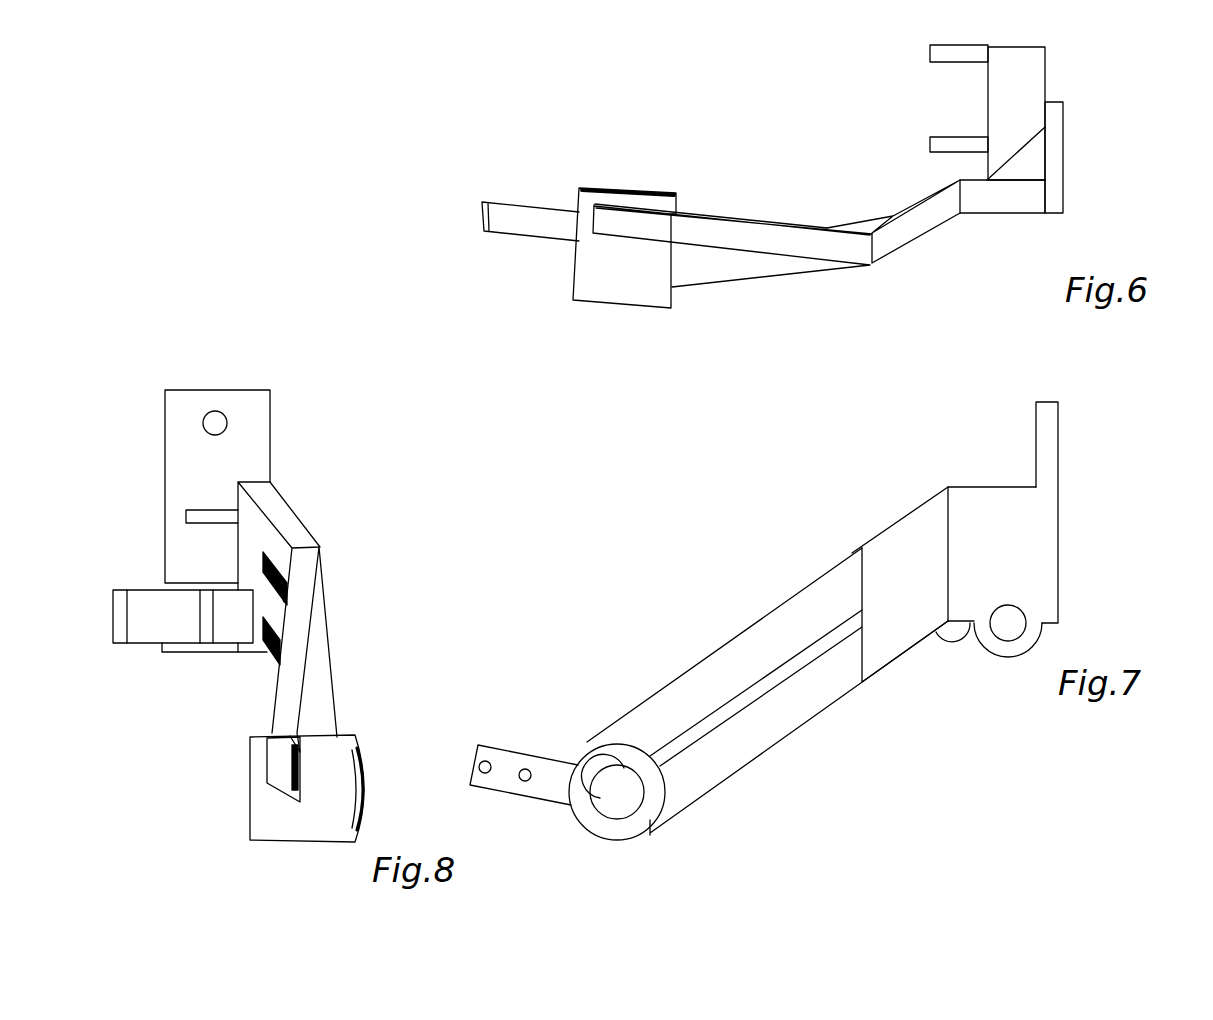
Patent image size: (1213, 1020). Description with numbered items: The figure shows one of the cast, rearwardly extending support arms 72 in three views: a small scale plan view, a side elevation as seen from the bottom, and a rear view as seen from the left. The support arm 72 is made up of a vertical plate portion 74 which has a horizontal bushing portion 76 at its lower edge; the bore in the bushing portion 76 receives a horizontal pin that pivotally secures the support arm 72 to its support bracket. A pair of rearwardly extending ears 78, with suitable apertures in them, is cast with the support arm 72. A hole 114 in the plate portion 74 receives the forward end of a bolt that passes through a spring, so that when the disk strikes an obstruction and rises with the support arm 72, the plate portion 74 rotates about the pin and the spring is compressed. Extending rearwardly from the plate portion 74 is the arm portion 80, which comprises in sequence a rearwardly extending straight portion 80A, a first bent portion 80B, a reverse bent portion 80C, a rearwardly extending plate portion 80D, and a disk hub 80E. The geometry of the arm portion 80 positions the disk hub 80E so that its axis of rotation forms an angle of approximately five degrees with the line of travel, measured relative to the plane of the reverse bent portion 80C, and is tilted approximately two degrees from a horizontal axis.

In FIG. 6, the support arm 72 is at (1115, 98).
In FIG. 7, the support arm 72 is at (1128, 502).
In FIG. 8, the support arm 72 is at (356, 484).
In FIG. 6, the vertical plate portion 74 is at (1064, 162).
In FIG. 7, the vertical plate portion 74 is at (1061, 420).
In FIG. 6, the horizontal bushing portion 76 is at (1037, 54).
In FIG. 8, the horizontal bushing portion 76 is at (144, 602).
In FIG. 6, the rearwardly extending ears 78 is at (929, 52).
In FIG. 8, the rearwardly extending ears 78 is at (119, 621).
In FIG. 6, the arm portion 80 is at (702, 204).
In FIG. 7, the arm portion 80 is at (855, 553).
In FIG. 8, the arm portion 80 is at (322, 548).
In FIG. 6, the rearwardly extending straight portion 80A is at (980, 200).
In FIG. 7, the rearwardly extending straight portion 80A is at (977, 486).
In FIG. 6, the first bent portion 80B is at (921, 232).
In FIG. 7, the first bent portion 80B is at (880, 490).
In FIG. 6, the reverse bent portion 80C is at (733, 235).
In FIG. 7, the reverse bent portion 80C is at (690, 668).
In FIG. 8, the reverse bent portion 80C is at (284, 698).
In FIG. 6, the rearwardly extending plate portion 80D is at (487, 218).
In FIG. 7, the rearwardly extending plate portion 80D is at (477, 762).
In FIG. 8, the rearwardly extending plate portion 80D is at (279, 770).
In FIG. 6, the disk hub 80E is at (608, 305).
In FIG. 7, the disk hub 80E is at (610, 841).
In FIG. 8, the disk hub 80E is at (257, 840).
In FIG. 8, the hole 114 is at (215, 414).